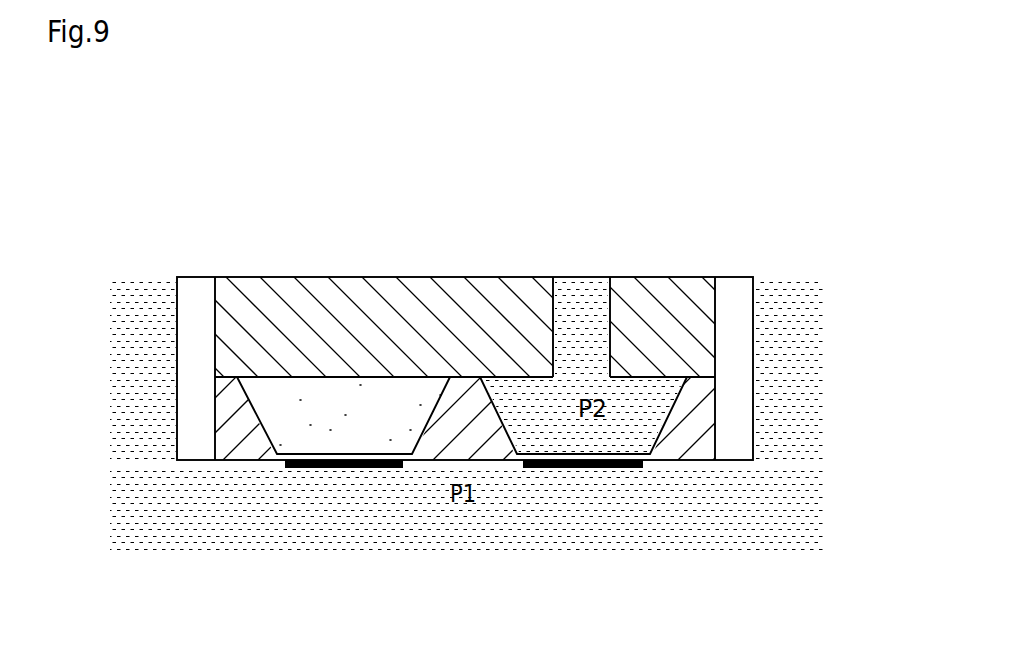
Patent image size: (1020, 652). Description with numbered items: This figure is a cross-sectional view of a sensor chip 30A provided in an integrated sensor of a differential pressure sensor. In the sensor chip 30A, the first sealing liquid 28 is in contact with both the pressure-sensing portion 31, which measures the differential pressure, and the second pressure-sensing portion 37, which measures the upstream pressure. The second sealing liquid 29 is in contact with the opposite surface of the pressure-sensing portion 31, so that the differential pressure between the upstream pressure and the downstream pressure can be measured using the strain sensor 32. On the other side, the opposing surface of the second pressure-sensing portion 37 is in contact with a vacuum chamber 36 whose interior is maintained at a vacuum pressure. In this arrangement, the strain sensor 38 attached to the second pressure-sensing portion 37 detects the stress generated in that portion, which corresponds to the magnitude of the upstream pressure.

The first sealing liquid 28 is at (485, 532).
The second sealing liquid 29 is at (587, 303).
The sensor chip 30A is at (721, 184).
The pressure-sensing portion 31 is at (582, 468).
The strain sensor 32 is at (617, 468).
The vacuum chamber 36 is at (340, 403).
The second pressure-sensing portion 37 is at (345, 468).
The strain sensor 38 is at (313, 468).